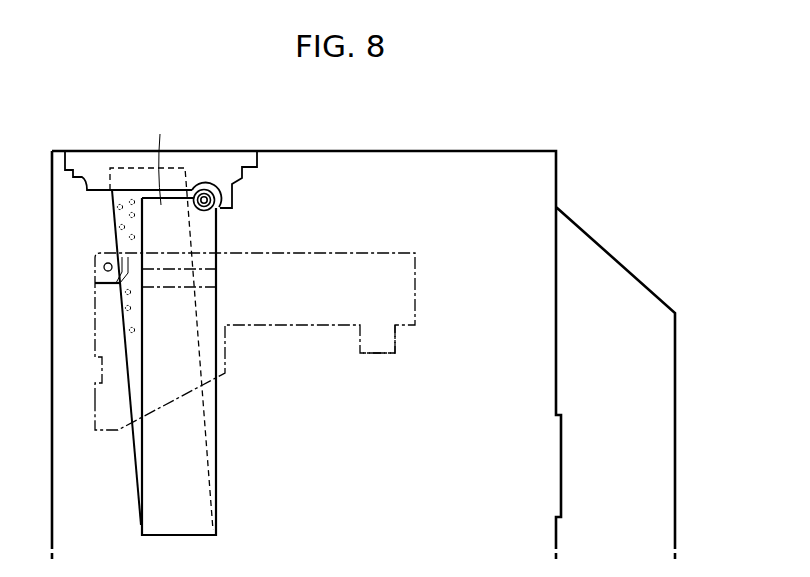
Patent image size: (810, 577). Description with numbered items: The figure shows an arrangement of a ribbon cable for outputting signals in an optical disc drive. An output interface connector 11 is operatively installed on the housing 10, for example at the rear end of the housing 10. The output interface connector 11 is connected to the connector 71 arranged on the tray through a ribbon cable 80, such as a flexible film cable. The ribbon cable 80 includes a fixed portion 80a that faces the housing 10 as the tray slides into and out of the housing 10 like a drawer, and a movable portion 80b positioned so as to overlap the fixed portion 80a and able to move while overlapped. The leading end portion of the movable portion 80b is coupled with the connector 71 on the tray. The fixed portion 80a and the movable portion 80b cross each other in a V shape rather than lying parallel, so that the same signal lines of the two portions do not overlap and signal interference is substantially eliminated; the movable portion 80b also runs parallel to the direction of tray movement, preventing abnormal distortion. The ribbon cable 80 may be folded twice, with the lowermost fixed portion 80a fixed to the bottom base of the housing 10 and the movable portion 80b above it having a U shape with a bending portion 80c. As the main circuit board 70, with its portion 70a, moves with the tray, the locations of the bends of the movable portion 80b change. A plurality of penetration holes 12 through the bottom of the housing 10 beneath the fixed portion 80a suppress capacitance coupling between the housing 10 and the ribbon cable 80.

The housing 10 is at (468, 160).
The output interface connector 11 is at (237, 173).
The penetration holes 12 is at (118, 200).
The main circuit board 70 is at (273, 318).
The frame protrusion 70a is at (395, 345).
The connector 71 is at (210, 278).
The ribbon cable 80 is at (211, 325).
The fixed portion 80a is at (204, 410).
The movable portion 80b is at (213, 438).
The bending portion 80c is at (160, 160).